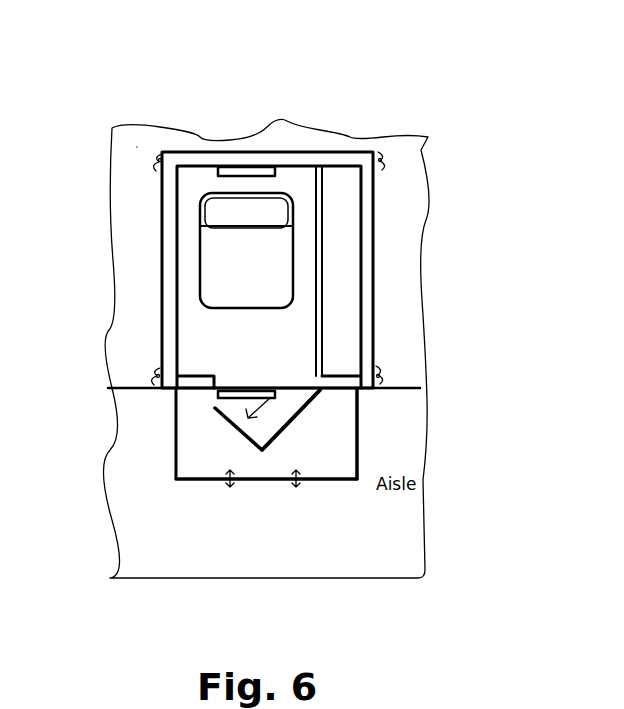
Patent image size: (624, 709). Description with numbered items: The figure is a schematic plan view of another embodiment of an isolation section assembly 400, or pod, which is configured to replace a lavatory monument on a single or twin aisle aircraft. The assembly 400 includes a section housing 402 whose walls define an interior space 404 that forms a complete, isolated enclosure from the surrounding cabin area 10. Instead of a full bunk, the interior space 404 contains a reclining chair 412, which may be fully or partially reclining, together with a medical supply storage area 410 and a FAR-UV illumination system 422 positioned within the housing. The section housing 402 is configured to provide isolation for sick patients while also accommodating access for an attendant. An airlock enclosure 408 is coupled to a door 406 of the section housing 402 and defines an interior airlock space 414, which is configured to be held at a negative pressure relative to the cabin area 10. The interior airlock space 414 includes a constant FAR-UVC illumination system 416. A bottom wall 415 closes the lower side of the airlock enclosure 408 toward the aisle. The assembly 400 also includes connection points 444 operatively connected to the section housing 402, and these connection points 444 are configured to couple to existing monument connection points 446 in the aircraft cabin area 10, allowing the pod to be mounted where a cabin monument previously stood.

The isolation section assembly 400 is at (132, 150).
The section housing 402 is at (168, 232).
The interior space 404 is at (190, 343).
The door 406 is at (294, 418).
The airlock enclosure 408 is at (172, 450).
The medical supply storage area 410 is at (340, 296).
The reclining chair 412 is at (246, 250).
The interior airlock space 414 is at (343, 425).
The bottom wall 415 is at (262, 487).
The constant FAR-UVC illumination system 416 is at (232, 426).
The FAR-UV illumination system 422 is at (230, 166).
The connection points 444 is at (152, 160).
The existing monument connection points 446 is at (160, 152).
The cabin area 10 is at (266, 348).